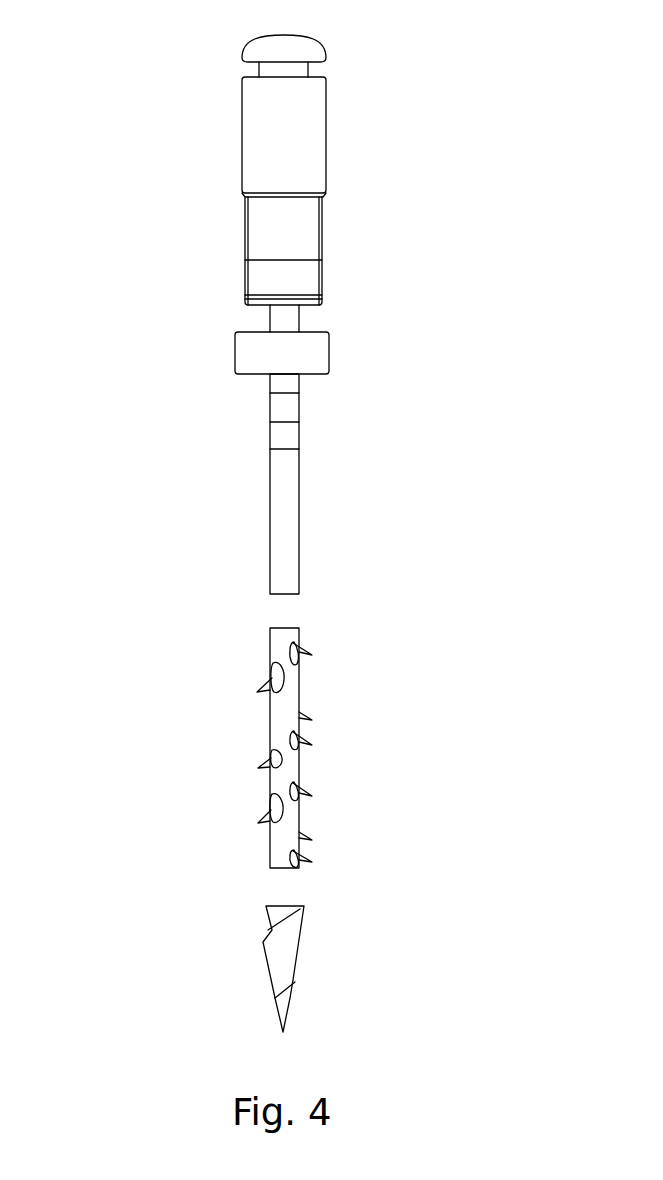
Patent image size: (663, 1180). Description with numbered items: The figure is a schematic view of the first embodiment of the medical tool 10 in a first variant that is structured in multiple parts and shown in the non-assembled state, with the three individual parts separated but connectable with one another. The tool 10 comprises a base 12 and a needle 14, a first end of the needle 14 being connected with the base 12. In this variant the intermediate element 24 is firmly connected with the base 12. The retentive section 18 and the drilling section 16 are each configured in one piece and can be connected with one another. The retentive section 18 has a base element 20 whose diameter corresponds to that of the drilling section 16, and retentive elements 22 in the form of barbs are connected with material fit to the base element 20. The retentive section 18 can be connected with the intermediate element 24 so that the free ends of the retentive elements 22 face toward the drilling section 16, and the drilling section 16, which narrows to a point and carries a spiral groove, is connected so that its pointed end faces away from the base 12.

The medical tool 10 is at (184, 256).
The base 12 is at (364, 232).
The needle 14 is at (339, 508).
The drilling section 16 is at (334, 960).
The retentive section 18 is at (333, 820).
The base element 20 is at (268, 648).
The retentive elements 22 is at (265, 753).
The intermediate element 24 is at (231, 498).